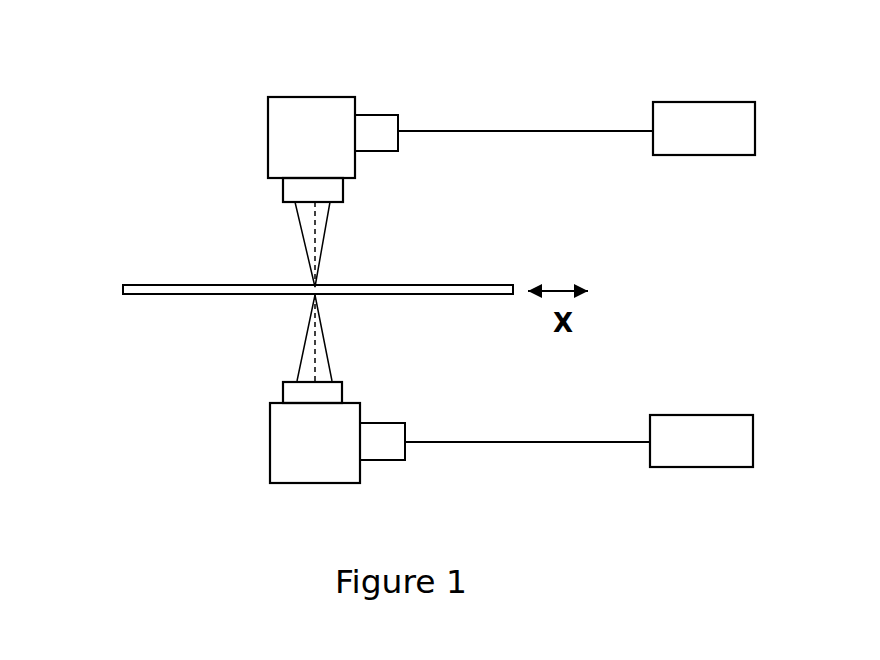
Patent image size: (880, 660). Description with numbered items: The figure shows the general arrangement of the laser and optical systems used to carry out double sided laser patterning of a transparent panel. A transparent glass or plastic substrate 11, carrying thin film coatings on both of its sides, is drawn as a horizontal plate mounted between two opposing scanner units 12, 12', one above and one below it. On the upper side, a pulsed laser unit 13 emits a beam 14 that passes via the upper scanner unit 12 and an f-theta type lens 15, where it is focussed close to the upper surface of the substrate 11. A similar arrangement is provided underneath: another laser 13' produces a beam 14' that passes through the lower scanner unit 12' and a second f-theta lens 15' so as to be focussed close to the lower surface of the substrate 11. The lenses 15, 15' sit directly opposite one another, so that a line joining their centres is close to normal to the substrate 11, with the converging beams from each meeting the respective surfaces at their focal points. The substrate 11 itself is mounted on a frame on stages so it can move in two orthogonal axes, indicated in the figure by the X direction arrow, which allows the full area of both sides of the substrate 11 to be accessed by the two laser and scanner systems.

The substrate 11 is at (163, 298).
The scanner unit 12 is at (291, 133).
The scanner unit 12' is at (264, 453).
The pulsed laser unit 13 is at (653, 89).
The laser 13' is at (672, 473).
The beam 14 is at (525, 79).
The beam 14' is at (527, 486).
The f-theta type lens 15 is at (267, 177).
The second f-theta lens 15' is at (225, 398).